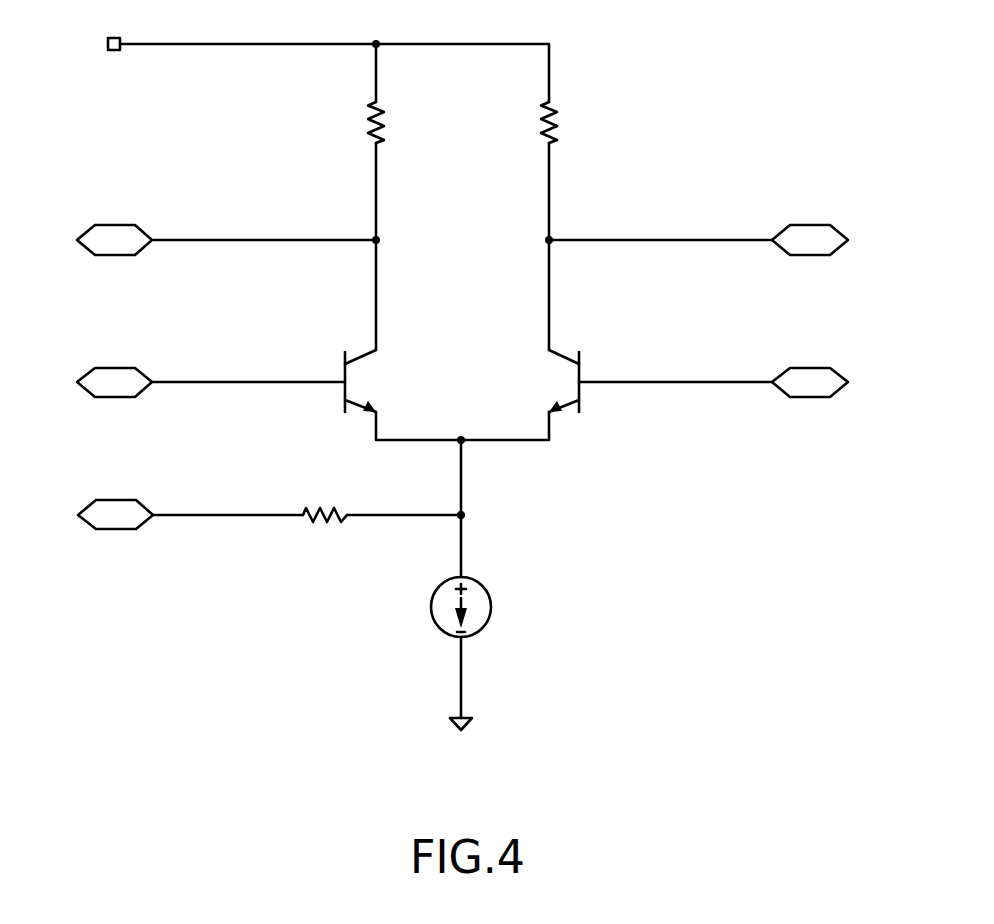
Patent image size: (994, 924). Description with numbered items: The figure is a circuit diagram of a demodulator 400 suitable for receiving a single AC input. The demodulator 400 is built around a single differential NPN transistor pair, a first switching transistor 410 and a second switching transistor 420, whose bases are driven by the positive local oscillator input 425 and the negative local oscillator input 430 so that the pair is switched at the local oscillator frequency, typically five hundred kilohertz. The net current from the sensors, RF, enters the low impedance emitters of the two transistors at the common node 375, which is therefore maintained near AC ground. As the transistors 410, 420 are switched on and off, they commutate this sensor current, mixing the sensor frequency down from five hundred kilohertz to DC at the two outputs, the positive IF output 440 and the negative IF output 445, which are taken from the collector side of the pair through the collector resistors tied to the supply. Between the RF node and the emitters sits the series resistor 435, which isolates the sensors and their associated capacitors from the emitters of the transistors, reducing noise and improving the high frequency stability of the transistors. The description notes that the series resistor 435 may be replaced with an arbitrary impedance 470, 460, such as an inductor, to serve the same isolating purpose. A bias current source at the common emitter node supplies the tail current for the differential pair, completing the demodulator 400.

The demodulator 400 is at (753, 78).
The impedance 470 is at (384, 110).
The impedance 460 is at (553, 108).
The IF+ output 440 is at (122, 225).
The IF− output 445 is at (797, 226).
The LO+ 425 is at (122, 368).
The LO− 430 is at (797, 368).
The N1 375 is at (123, 500).
The resistor Rns 435 is at (320, 526).
The QswP transistor 410 is at (372, 379).
The QswN transistor 420 is at (548, 372).